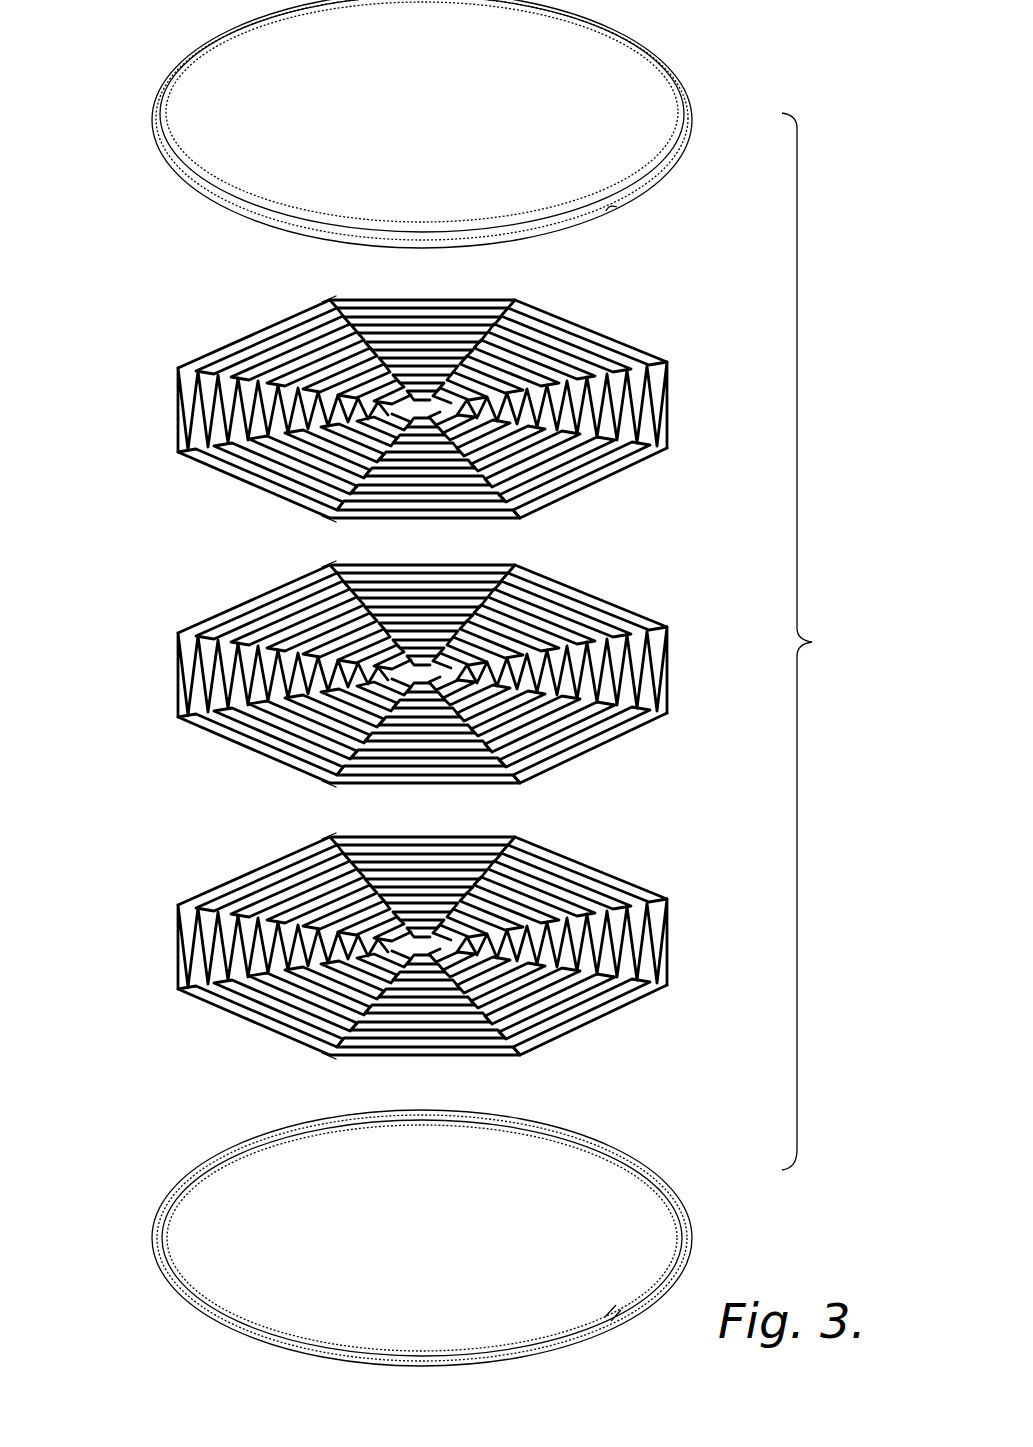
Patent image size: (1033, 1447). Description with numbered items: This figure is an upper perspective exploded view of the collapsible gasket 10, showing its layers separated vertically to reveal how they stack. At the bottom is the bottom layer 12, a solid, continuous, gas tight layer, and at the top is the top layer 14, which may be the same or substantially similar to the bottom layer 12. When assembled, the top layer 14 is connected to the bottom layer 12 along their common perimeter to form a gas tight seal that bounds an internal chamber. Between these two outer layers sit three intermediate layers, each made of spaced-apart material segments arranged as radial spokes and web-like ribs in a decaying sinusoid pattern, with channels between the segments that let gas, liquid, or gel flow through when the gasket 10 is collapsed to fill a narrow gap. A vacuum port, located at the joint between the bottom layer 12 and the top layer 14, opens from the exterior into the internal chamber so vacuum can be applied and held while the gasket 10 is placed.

The collapsible gasket 10 is at (185, 33).
The bottom layer 12 is at (178, 1236).
The top layer 14 is at (168, 136).